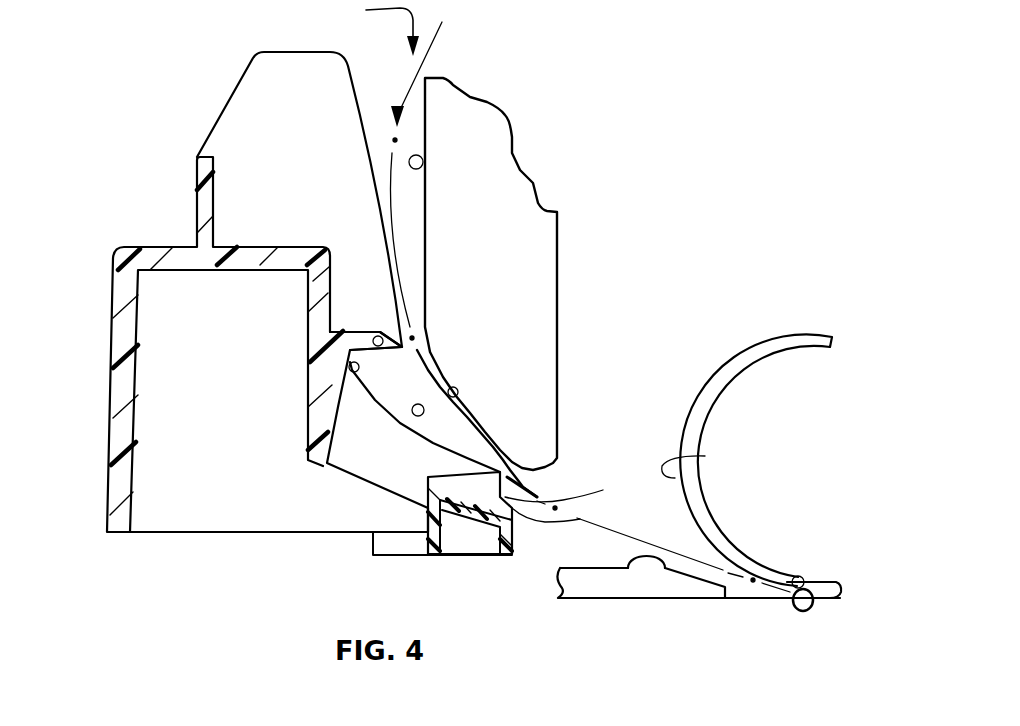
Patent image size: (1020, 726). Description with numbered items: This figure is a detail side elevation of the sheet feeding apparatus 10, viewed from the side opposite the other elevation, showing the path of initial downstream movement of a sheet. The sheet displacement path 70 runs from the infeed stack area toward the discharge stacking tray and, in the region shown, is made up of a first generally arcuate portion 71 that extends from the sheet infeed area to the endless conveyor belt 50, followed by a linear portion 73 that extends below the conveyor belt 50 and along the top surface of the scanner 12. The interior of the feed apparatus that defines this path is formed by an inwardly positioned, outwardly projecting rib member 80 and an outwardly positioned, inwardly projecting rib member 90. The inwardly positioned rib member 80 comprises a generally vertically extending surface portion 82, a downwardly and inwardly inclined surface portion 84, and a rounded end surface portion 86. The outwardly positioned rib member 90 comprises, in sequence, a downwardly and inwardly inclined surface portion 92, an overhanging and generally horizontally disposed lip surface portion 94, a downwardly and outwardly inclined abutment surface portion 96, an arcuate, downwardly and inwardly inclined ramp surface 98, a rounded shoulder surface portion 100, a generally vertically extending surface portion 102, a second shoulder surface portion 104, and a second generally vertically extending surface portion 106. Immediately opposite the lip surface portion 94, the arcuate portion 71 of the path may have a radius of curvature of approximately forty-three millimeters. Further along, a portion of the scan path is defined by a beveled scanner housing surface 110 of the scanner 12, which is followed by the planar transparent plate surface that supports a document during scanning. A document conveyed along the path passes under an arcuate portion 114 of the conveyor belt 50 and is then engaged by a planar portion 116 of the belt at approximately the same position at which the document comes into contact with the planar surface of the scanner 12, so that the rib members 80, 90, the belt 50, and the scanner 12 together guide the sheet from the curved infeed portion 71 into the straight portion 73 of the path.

The housing 10 is at (109, 248).
The scanner 12 is at (540, 580).
The endless conveyor belt 50 is at (703, 392).
The sheet displacement path 70 is at (374, 28).
The first generally arcuate portion 71 is at (417, 68).
The linear portion 73 is at (827, 597).
The inwardly positioned, outwardly projecting rib member 80 is at (503, 160).
The generally vertically extending surface portion 82 is at (421, 151).
The downwardly and inwardly inclined surface portion 84 is at (457, 385).
The rounded end surface portion 86 is at (557, 462).
The outwardly positioned, inwardly projecting rib member 90 is at (250, 87).
The downwardly and inwardly inclined surface portion 92 is at (351, 90).
The lip surface portion 94 is at (390, 340).
The abutment surface portion 96 is at (350, 373).
The ramp surface 98 is at (413, 416).
The rounded shoulder surface portion 100 is at (530, 485).
The generally vertically extending surface portion 102 is at (581, 494).
The second shoulder surface portion 104 is at (581, 518).
The second generally vertically extending surface portion 106 is at (512, 542).
The beveled scanner housing surface 110 is at (645, 556).
The arcuate portion of the conveyor belt 114 is at (707, 465).
The planar portion of the conveyor belt 116 is at (796, 577).